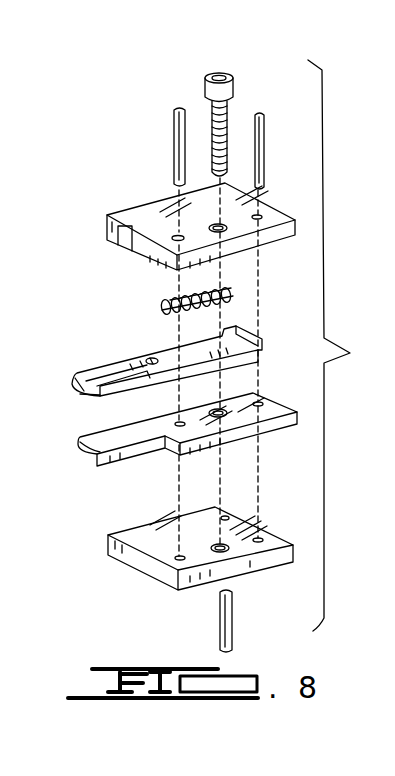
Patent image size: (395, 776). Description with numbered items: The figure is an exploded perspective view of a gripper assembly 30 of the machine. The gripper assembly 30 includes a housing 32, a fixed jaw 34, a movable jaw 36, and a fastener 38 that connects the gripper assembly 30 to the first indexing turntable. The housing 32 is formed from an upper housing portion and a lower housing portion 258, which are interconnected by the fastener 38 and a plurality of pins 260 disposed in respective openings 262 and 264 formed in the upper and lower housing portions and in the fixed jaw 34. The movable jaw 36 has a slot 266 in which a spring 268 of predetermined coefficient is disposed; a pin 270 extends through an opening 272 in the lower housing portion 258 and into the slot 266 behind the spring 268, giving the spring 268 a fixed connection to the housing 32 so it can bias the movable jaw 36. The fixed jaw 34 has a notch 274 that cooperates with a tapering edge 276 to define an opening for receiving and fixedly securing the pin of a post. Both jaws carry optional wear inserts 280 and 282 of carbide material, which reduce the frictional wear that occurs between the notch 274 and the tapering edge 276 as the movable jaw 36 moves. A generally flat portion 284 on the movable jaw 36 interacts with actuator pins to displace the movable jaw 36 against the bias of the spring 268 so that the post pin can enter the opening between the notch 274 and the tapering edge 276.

The gripper assembly 30 is at (70, 503).
The housing 32 is at (123, 201).
The fixed jaw 34 is at (160, 443).
The movable jaw 36 is at (161, 378).
The fastener 38 is at (227, 83).
The lower housing portion 258 is at (188, 545).
The pins 260 is at (176, 138).
The openings 262 is at (221, 226).
The openings 264 is at (258, 217).
The slot 266 is at (167, 352).
The spring 268 is at (160, 305).
The pin 270 is at (222, 617).
The opening 272 is at (232, 517).
The notch 274 is at (83, 442).
The tapering edge 276 is at (85, 394).
The wear insert 280 is at (114, 428).
The wear insert 282 is at (97, 382).
The generally flat portion 284 is at (75, 394).